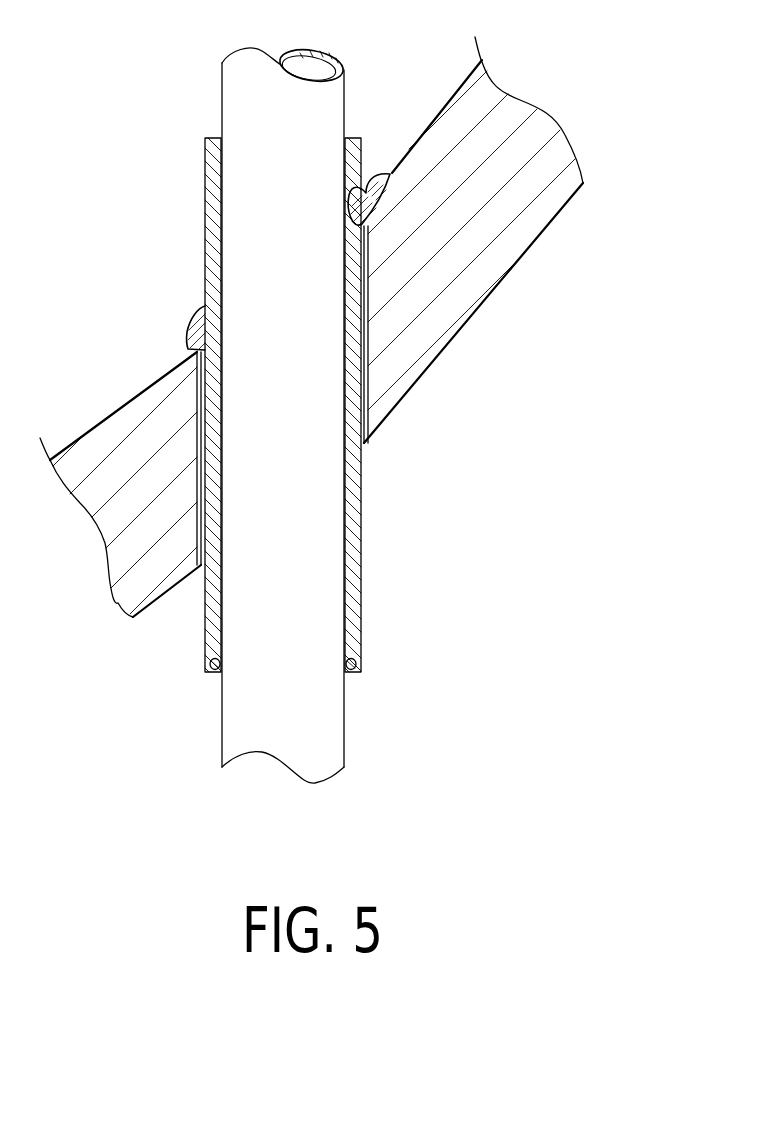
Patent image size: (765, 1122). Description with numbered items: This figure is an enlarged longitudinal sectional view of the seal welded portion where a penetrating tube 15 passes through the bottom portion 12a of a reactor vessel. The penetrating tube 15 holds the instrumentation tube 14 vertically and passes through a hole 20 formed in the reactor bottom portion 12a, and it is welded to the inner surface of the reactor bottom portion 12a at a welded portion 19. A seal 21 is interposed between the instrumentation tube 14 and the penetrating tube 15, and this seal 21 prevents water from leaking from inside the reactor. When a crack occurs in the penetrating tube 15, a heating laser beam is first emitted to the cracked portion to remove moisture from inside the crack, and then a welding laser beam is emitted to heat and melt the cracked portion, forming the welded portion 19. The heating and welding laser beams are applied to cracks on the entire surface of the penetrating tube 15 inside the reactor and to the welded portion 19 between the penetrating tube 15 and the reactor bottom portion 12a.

The instrumentation tube 14 is at (330, 102).
The penetrating tube 15 is at (362, 523).
The bottom portion of the reactor vessel 12a is at (487, 323).
The welded portion 19 is at (384, 176).
The hole 20 is at (363, 446).
The seal 21 is at (352, 673).